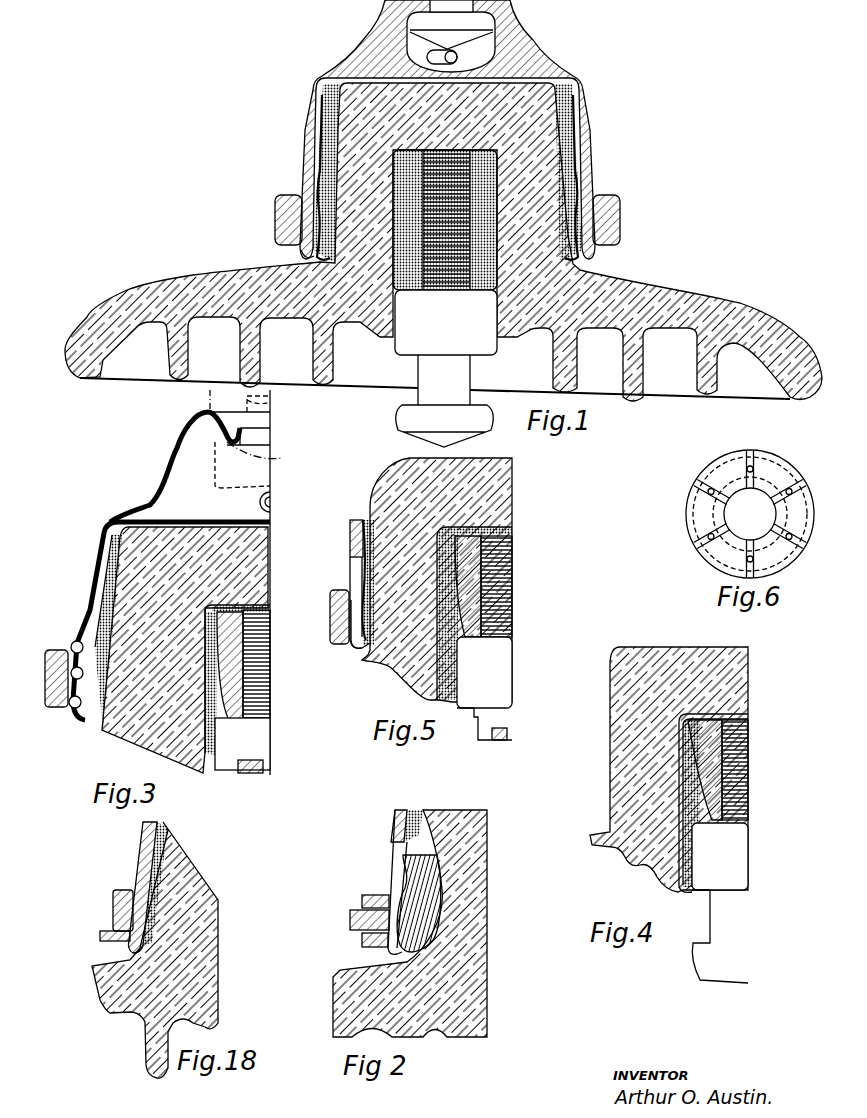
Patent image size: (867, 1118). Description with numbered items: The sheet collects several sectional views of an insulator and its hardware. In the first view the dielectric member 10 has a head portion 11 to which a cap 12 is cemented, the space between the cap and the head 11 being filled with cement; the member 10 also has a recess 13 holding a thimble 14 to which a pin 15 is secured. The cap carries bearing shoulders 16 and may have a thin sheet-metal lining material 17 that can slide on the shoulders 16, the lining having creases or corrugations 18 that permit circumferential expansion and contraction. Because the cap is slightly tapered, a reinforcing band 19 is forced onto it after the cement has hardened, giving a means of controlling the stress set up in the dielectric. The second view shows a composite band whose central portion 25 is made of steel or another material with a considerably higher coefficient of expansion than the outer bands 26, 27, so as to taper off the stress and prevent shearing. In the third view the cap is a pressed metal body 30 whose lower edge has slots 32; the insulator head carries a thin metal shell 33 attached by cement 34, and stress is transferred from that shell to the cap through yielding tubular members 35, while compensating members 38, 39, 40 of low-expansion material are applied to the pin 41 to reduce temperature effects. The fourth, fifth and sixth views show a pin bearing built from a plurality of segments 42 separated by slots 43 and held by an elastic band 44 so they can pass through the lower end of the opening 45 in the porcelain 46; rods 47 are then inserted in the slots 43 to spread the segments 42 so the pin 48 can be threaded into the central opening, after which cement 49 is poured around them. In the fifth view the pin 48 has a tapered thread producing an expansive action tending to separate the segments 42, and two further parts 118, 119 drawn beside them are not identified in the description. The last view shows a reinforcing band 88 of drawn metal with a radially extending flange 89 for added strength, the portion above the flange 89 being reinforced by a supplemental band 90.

In FIG. 1, the dielectric member 10 is at (662, 290).
In FIG. 1, the head portion 11 is at (548, 108).
In FIG. 1, the cap 12 is at (581, 144).
In FIG. 1, the recess 13 is at (510, 216).
In FIG. 1, the thimble 14 is at (515, 192).
In FIG. 1, the pin 15 is at (487, 348).
In FIG. 1, the bearing shoulders 16 is at (290, 240).
In FIG. 1, the lining material 17 is at (310, 183).
In FIG. 1, the creases or corrugations 18 is at (322, 170).
In FIG. 1, the reinforcing band 19 is at (278, 212).
In FIG. 3, the pressed metal body 30 is at (106, 525).
In FIG. 3, the slots 32 is at (82, 625).
In FIG. 3, the thin metal shell 33 is at (106, 551).
In FIG. 3, the cement 34 is at (90, 603).
In FIG. 3, the tubular members 35 is at (76, 712).
In FIG. 3, the compensating member 38 is at (252, 690).
In FIG. 3, the compensating member 39 is at (256, 657).
In FIG. 3, the compensating member 40 is at (255, 625).
In FIG. 3, the pin 41 is at (255, 730).
In FIG. 5, the segments 42 is at (437, 550).
In FIG. 6, the segments 42 is at (718, 556).
In FIG. 4, the segments 42 is at (678, 727).
In FIG. 6, the slots 43 is at (695, 479).
In FIG. 4, the elastic band 44 is at (686, 767).
In FIG. 4, the opening 45 is at (681, 884).
In FIG. 4, the porcelain 46 is at (622, 832).
In FIG. 6, the rods 47 is at (740, 469).
In FIG. 5, the pin 48 is at (483, 668).
In FIG. 4, the pin 48 is at (718, 860).
In FIG. 4, the cement 49 is at (687, 803).
In FIG. 18, the reinforcing band 88 is at (130, 890).
In FIG. 18, the radially extending flange 89 is at (100, 938).
In FIG. 18, the supplemental band 90 is at (113, 902).
In FIG. 5, the sheet end 118 is at (348, 580).
In FIG. 5, the ring 119 is at (331, 598).
In FIG. 2, the central portion 25 is at (350, 920).
In FIG. 2, the band 26 is at (358, 945).
In FIG. 2, the band 27 is at (362, 897).